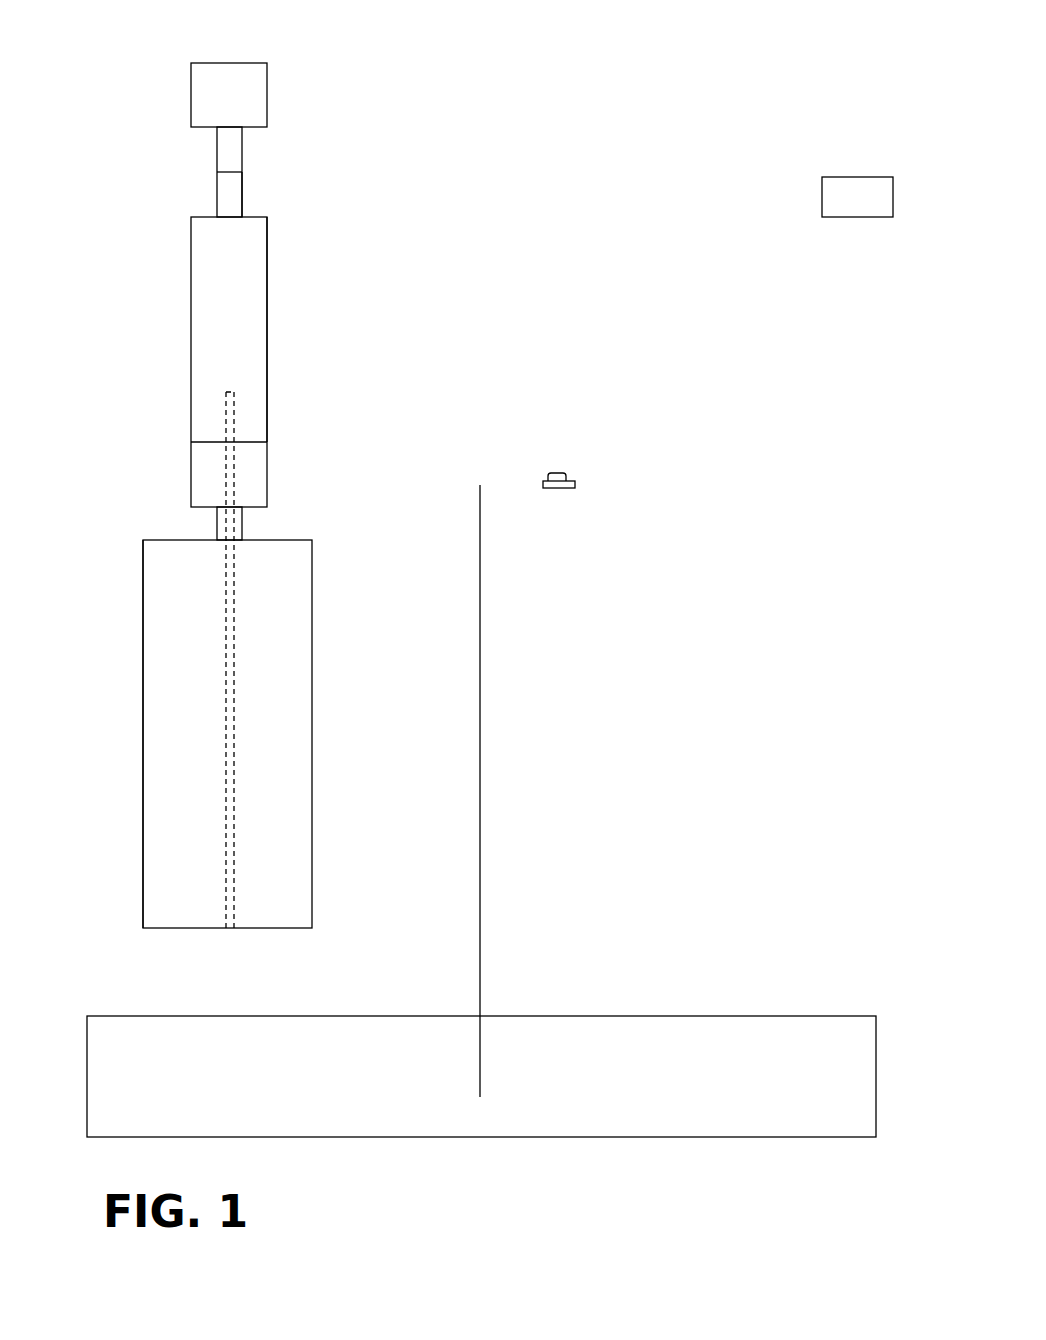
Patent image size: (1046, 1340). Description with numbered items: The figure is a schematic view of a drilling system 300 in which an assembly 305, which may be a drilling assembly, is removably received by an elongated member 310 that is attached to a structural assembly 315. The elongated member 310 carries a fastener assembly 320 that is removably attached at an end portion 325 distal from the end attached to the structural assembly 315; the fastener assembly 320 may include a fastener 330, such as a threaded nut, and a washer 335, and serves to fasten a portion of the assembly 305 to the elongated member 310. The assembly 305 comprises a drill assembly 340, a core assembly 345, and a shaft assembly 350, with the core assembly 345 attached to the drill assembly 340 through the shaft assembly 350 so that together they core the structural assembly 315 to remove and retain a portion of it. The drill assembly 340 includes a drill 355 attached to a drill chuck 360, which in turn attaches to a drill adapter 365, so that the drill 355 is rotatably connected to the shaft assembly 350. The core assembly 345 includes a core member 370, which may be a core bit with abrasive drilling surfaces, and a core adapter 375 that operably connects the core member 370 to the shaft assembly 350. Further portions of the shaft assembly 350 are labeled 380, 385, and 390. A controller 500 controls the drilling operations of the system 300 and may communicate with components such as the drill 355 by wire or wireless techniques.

The system 300 is at (588, 100).
The assembly 305 is at (320, 200).
The elongated member 310 is at (481, 662).
The structural assembly 315 is at (641, 1158).
The fastener assembly 320 is at (588, 445).
The end portion 325 is at (480, 466).
The fastener 330 is at (555, 472).
The washer 335 is at (560, 490).
The drill assembly 340 is at (160, 198).
The core assembly 345 is at (122, 714).
The shaft assembly 350 is at (170, 328).
The drill 355 is at (228, 68).
The drill chuck 360 is at (226, 150).
The drill adapter 365 is at (237, 195).
The core member 370 is at (161, 865).
The core adapter 375 is at (242, 527).
The cylinder wall 380 is at (278, 330).
The internal shaft 385 is at (240, 406).
The cylinder lower chamber 390 is at (257, 463).
The controller 500 is at (857, 177).